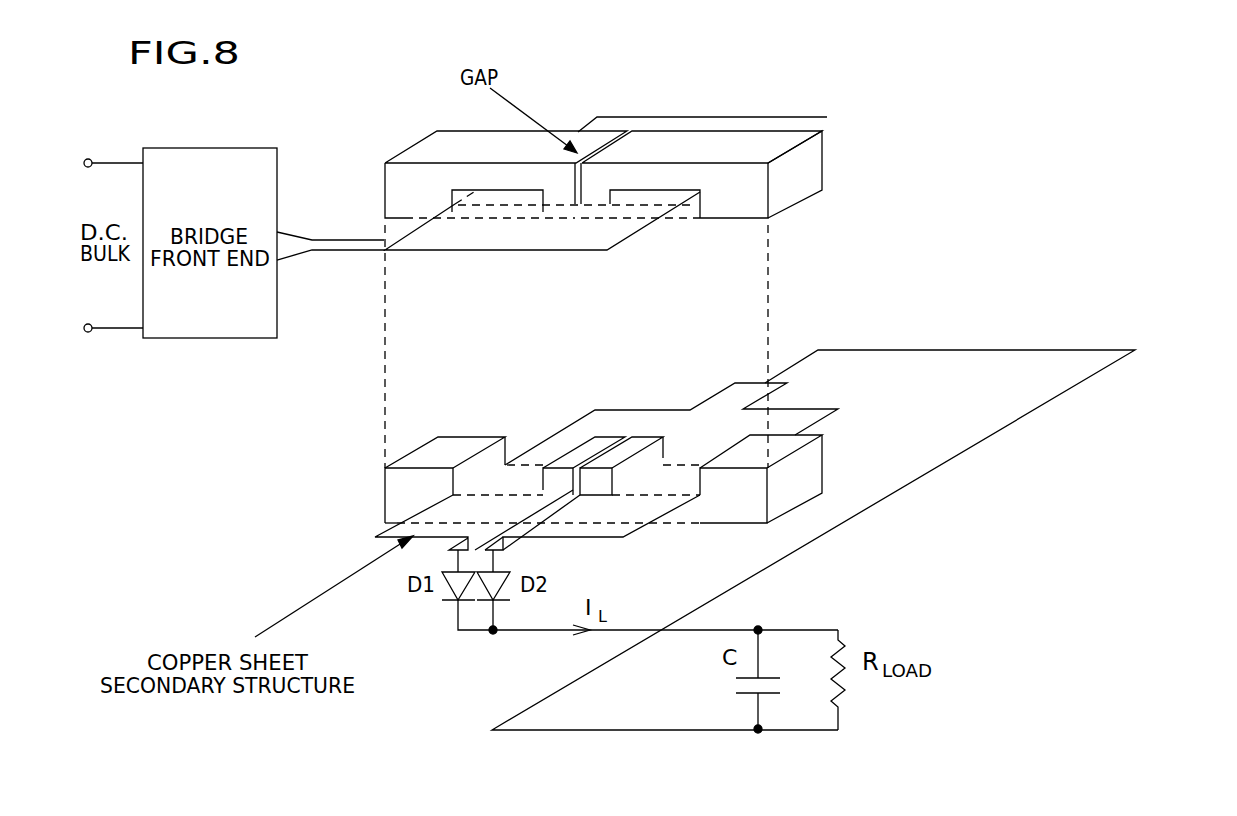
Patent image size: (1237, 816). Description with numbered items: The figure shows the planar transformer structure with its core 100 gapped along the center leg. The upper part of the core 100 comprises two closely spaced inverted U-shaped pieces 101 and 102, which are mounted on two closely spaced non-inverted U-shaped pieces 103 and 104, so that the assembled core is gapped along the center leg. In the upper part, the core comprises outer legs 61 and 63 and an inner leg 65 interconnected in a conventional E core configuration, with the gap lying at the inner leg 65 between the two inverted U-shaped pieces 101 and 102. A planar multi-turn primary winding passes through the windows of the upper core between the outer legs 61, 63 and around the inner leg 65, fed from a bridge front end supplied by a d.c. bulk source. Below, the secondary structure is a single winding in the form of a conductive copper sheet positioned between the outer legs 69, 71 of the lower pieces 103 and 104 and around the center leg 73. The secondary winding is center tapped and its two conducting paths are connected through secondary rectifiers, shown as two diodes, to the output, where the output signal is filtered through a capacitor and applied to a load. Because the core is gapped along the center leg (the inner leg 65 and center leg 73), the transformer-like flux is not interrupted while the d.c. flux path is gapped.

The core 100 is at (775, 139).
The inverted U-shaped piece 101 is at (460, 142).
The inverted U-shaped piece 102 is at (693, 150).
The outer leg 61 is at (398, 192).
The outer leg 63 is at (793, 188).
The inner leg 65 is at (560, 187).
The outer leg 69 is at (418, 452).
The outer leg 71 is at (803, 470).
The center leg 73 is at (593, 452).
The non-inverted U-shaped piece 103 is at (468, 445).
The non-inverted U-shaped piece 104 is at (755, 455).